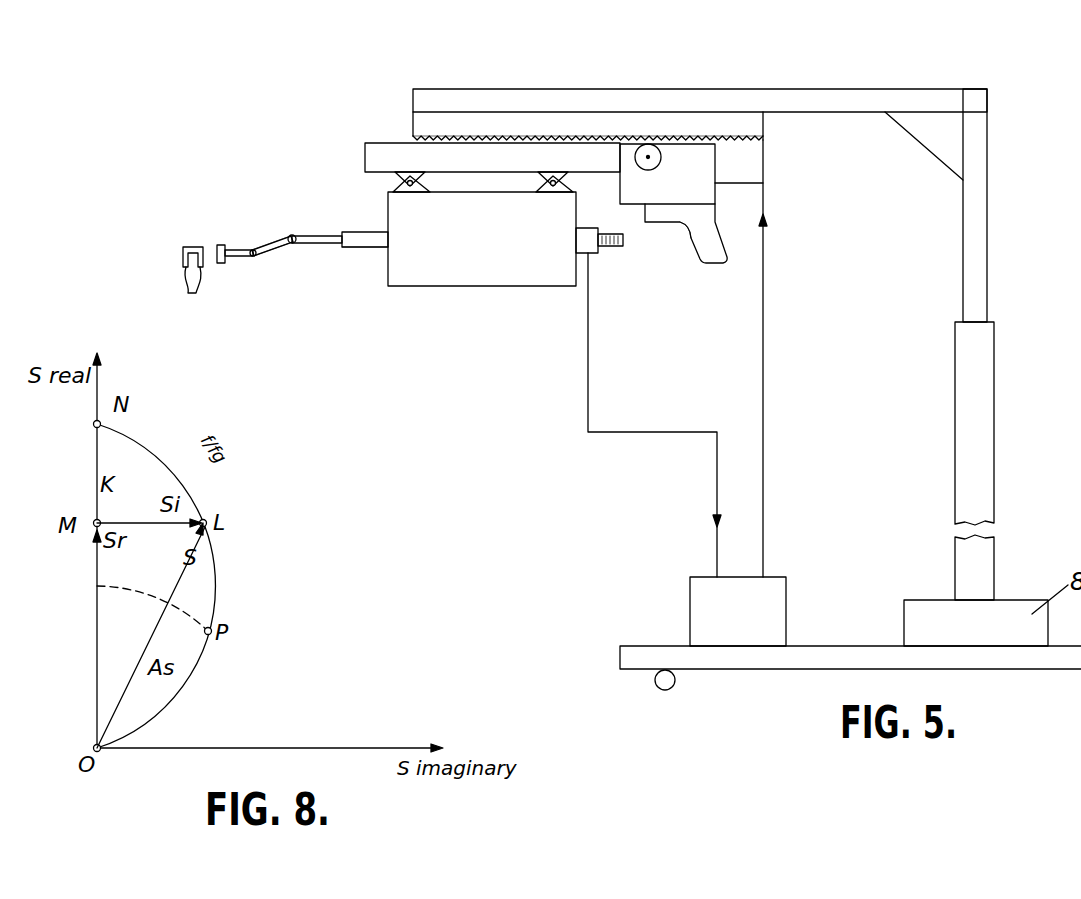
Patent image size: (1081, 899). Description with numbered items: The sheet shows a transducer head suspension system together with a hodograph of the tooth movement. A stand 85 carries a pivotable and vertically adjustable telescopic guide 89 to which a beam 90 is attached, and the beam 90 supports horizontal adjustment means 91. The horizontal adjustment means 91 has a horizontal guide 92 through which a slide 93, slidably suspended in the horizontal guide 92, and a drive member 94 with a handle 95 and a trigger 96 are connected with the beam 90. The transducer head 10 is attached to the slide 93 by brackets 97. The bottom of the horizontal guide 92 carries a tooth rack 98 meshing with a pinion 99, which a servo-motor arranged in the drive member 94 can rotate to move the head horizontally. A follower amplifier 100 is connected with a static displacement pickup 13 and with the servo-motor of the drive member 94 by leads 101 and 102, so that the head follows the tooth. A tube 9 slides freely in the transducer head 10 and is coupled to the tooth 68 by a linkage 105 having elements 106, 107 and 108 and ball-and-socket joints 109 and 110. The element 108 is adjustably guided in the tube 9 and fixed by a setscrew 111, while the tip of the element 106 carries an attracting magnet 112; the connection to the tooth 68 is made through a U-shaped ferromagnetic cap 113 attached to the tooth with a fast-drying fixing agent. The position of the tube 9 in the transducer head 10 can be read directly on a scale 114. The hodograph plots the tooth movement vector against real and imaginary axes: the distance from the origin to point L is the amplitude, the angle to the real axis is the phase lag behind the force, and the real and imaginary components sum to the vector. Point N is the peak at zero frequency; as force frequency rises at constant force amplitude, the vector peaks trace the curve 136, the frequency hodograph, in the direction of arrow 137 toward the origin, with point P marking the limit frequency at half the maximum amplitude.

In FIG. 5, the tube 9 is at (377, 250).
In FIG. 5, the transducer head 10 is at (485, 278).
In FIG. 5, the static displacement pickup 13 is at (585, 233).
In FIG. 5, the tooth 68 is at (205, 277).
In FIG. 5, the stand 85 is at (872, 373).
In FIG. 5, the telescopic guide 89 is at (973, 232).
In FIG. 5, the beam 90 is at (832, 103).
In FIG. 5, the horizontal adjustment means 91 is at (342, 153).
In FIG. 5, the horizontal guide 92 is at (570, 118).
In FIG. 5, the slide 93 is at (464, 146).
In FIG. 5, the drive member 94 is at (708, 168).
In FIG. 5, the handle 95 is at (713, 257).
In FIG. 5, the trigger 96 is at (688, 239).
In FIG. 5, the brackets 97 is at (543, 193).
In FIG. 5, the tooth rack 98 is at (633, 140).
In FIG. 5, the pinion 99 is at (650, 157).
In FIG. 5, the follower amplifier 100 is at (777, 585).
In FIG. 5, the lead 101 is at (587, 372).
In FIG. 5, the lead 102 is at (763, 440).
In FIG. 5, the linkage 105 is at (272, 228).
In FIG. 5, the element 106 is at (238, 258).
In FIG. 5, the element 107 is at (277, 248).
In FIG. 5, the element 108 is at (328, 244).
In FIG. 5, the ball-and-socket joint 109 is at (252, 250).
In FIG. 5, the ball-and-socket joint 110 is at (294, 235).
In FIG. 5, the setscrew 111 is at (355, 232).
In FIG. 5, the attracting magnet 112 is at (217, 248).
In FIG. 5, the cap 113 is at (183, 255).
In FIG. 5, the scale 114 is at (613, 248).
In FIG. 8, the curve 136 is at (212, 576).
In FIG. 8, the arrow 137 is at (160, 427).